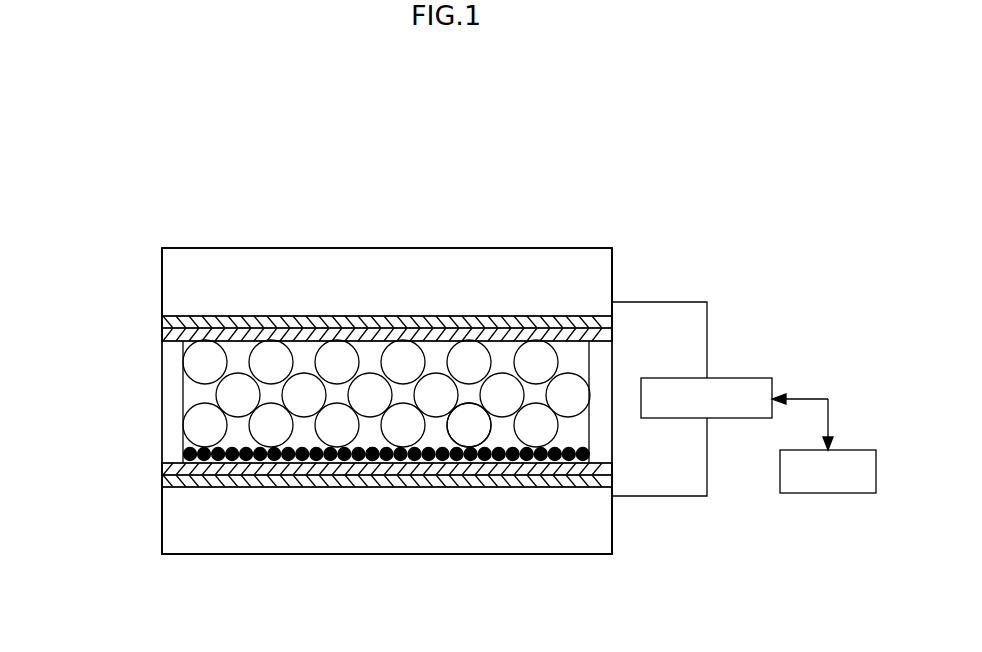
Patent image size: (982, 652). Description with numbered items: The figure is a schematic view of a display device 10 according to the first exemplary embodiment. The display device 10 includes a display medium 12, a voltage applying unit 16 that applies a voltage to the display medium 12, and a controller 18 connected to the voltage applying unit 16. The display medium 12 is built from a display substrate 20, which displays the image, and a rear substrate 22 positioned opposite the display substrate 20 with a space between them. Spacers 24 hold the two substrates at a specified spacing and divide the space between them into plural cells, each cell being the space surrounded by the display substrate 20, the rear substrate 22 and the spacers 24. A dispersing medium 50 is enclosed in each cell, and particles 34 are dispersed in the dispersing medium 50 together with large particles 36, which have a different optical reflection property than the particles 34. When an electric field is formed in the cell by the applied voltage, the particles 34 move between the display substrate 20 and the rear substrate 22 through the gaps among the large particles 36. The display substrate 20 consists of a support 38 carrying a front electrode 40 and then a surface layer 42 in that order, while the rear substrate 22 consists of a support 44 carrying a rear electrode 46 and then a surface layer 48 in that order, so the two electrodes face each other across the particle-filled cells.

The display device 10 is at (502, 183).
The display medium 12 is at (563, 247).
The voltage applying unit 16 is at (745, 378).
The controller 18 is at (828, 495).
The display substrate 20 is at (95, 252).
The rear substrate 22 is at (95, 455).
The spacers 24 is at (172, 418).
The particles 34 is at (366, 447).
The large particles 36 is at (465, 428).
The support 38 is at (172, 272).
The front electrode 40 is at (166, 316).
The surface layer 42 is at (172, 337).
The support 44 is at (172, 536).
The rear electrode 46 is at (166, 481).
The surface layer 48 is at (166, 466).
The dispersing medium 50 is at (571, 437).